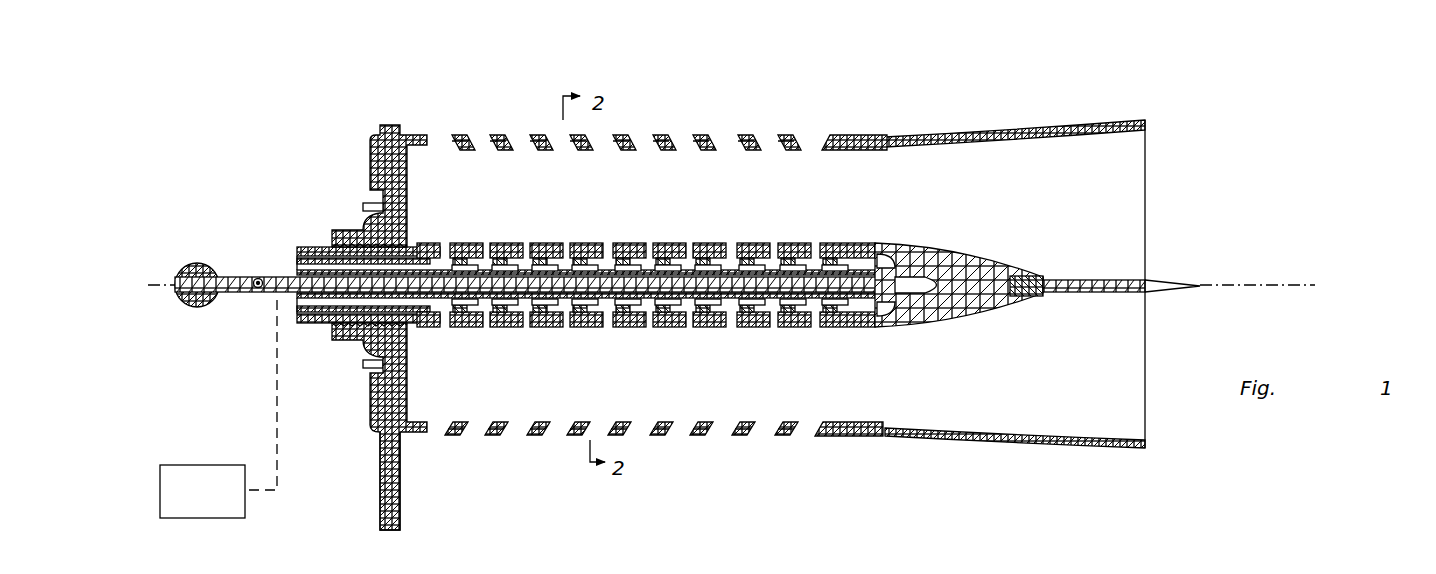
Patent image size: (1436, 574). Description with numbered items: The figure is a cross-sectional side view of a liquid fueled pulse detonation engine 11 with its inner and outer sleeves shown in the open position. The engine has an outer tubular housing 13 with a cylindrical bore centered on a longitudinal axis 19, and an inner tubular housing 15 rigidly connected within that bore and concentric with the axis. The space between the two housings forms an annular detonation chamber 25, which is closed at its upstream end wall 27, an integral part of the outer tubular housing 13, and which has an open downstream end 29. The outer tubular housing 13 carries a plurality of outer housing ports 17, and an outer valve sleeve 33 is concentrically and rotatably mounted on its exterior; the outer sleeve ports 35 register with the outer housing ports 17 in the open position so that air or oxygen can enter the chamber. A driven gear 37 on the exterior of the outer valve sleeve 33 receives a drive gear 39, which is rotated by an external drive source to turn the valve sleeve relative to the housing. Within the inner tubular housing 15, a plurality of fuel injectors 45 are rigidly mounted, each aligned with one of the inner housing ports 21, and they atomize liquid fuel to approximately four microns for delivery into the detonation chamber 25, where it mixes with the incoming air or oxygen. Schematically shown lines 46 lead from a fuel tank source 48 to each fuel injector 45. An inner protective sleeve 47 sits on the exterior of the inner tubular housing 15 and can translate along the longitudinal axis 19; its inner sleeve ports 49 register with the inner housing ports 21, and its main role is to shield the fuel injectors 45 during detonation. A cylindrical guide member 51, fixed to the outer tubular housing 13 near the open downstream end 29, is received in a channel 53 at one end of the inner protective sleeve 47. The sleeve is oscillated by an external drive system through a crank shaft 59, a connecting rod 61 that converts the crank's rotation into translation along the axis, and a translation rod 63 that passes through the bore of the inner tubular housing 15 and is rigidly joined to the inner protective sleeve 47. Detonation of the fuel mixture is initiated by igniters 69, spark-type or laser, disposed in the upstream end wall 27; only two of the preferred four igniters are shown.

The pulse detonation engine 11 is at (340, 127).
The outer tubular housing 13 is at (933, 136).
The inner tubular housing 15 is at (415, 325).
The outer housing ports 17 is at (425, 142).
The longitudinal axis 19 is at (1265, 285).
The inner housing ports 21 is at (697, 243).
The annular detonation chamber 25 is at (608, 199).
The upstream end wall 27 is at (405, 164).
The open downstream end 29 is at (1133, 182).
The outer valve sleeve 33 is at (856, 134).
The outer sleeve ports 35 is at (460, 138).
The driven gear 37 is at (380, 440).
The drive gear 39 is at (380, 494).
The fuel injectors 45 is at (787, 243).
The lines 46 is at (277, 383).
The inner protective sleeve 47 is at (882, 243).
The fuel tank source 48 is at (205, 518).
The inner sleeve ports 49 is at (490, 243).
The cylindrical guide member 51 is at (1090, 280).
The channel 53 is at (995, 277).
The crank shaft 59 is at (207, 300).
The connecting rod 61 is at (228, 268).
The translation rod 63 is at (287, 272).
The igniters 69 is at (382, 205).